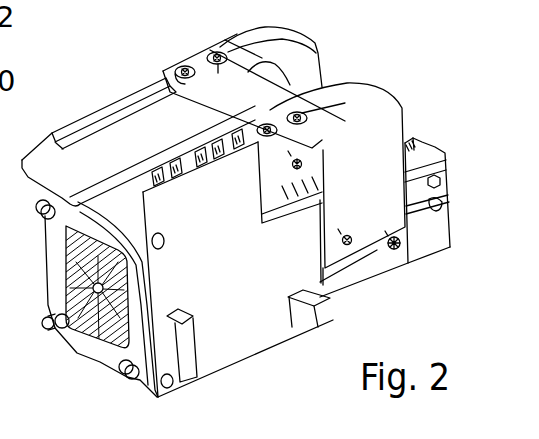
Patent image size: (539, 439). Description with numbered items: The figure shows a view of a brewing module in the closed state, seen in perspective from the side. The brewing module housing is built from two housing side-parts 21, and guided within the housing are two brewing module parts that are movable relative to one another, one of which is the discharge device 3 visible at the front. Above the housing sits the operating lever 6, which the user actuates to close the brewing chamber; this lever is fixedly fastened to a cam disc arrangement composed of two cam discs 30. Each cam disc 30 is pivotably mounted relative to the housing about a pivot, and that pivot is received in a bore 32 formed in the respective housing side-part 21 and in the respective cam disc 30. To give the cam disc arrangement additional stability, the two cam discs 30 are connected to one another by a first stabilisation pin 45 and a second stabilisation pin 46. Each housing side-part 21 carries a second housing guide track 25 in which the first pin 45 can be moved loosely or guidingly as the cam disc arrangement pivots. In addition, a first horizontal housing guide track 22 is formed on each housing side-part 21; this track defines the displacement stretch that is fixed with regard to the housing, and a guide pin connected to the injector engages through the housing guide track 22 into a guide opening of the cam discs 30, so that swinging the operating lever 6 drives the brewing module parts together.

The discharge device 3 is at (107, 337).
The operating lever 6 is at (64, 172).
The housing side-part 21 is at (424, 162).
The first horizontal housing guide track 22 is at (419, 198).
The second housing guide track 25 is at (353, 275).
The cam disc 30 is at (355, 160).
The bore 32 is at (347, 243).
The first stabilisation pin 45 is at (394, 243).
The second stabilisation pin 46 is at (291, 168).